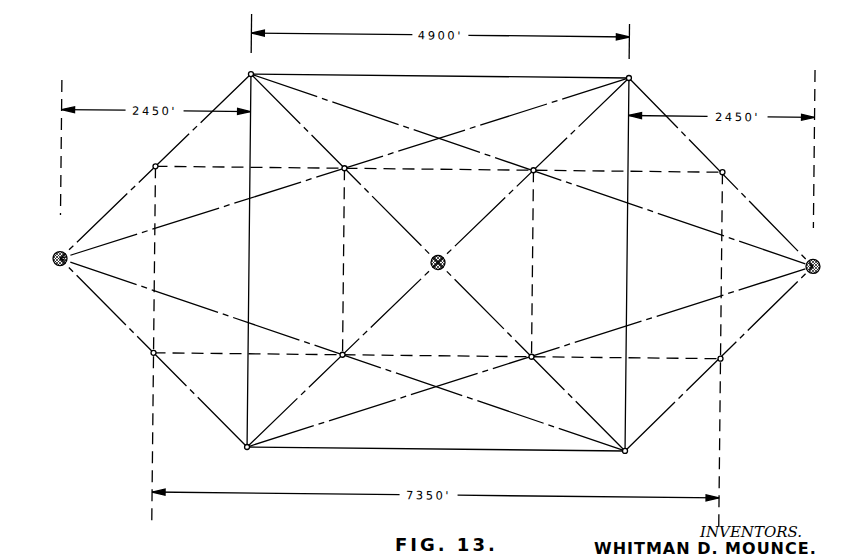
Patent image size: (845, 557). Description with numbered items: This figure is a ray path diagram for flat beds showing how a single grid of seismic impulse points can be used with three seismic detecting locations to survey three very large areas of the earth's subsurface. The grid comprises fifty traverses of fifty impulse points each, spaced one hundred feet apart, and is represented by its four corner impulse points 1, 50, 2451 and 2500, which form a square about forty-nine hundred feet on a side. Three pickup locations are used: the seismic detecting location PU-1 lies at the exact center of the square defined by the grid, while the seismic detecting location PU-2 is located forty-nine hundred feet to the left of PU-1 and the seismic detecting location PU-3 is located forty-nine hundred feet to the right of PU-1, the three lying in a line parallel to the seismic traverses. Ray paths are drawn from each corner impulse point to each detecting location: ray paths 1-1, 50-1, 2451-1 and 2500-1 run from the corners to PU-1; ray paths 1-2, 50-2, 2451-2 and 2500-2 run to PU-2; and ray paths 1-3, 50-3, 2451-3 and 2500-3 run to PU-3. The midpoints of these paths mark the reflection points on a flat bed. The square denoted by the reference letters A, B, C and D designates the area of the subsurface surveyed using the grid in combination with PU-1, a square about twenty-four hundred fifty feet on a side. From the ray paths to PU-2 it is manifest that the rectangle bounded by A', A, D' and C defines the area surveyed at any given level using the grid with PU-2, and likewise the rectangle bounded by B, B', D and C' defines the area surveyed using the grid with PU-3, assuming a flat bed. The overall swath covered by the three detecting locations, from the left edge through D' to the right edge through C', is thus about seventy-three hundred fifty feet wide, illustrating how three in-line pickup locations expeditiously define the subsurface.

The impulse point 1 is at (252, 64).
The impulse point 50 is at (635, 73).
The impulse point 2451 is at (249, 456).
The impulse point 2500 is at (627, 460).
The seismic detecting location PU-1 is at (464, 263).
The seismic detecting location PU-2 is at (42, 269).
The seismic detecting location PU-3 is at (814, 270).
The reference letter A is at (344, 160).
The reference letter B is at (533, 160).
The reference letter C is at (345, 369).
The reference letter D is at (531, 370).
The reference letter A' is at (150, 158).
The reference letter B' is at (728, 162).
The reference letter C' is at (726, 372).
The reference letter D' is at (146, 365).
The ray path 1-1 is at (344, 169).
The ray path 1-2 is at (167, 172).
The ray path 1-3 is at (532, 169).
The ray path 50-1 is at (533, 170).
The ray path 50-2 is at (344, 169).
The ray path 50-3 is at (722, 169).
The ray path 2451-1 is at (344, 356).
The ray path 2451-2 is at (154, 356).
The ray path 2451-3 is at (532, 356).
The ray path 2500-1 is at (532, 356).
The ray path 2500-2 is at (344, 356).
The ray path 2500-3 is at (722, 356).